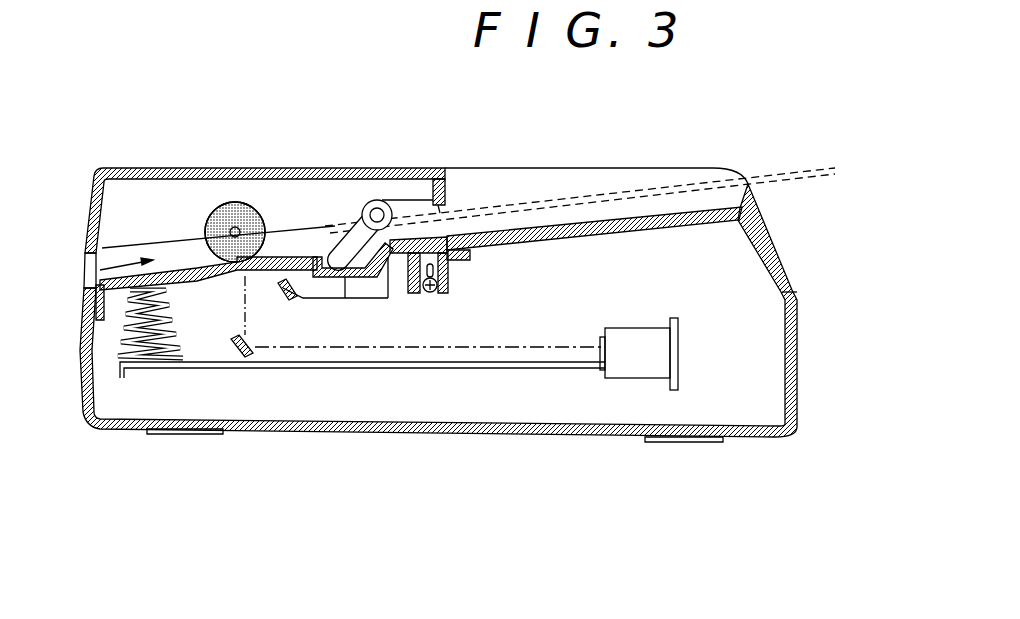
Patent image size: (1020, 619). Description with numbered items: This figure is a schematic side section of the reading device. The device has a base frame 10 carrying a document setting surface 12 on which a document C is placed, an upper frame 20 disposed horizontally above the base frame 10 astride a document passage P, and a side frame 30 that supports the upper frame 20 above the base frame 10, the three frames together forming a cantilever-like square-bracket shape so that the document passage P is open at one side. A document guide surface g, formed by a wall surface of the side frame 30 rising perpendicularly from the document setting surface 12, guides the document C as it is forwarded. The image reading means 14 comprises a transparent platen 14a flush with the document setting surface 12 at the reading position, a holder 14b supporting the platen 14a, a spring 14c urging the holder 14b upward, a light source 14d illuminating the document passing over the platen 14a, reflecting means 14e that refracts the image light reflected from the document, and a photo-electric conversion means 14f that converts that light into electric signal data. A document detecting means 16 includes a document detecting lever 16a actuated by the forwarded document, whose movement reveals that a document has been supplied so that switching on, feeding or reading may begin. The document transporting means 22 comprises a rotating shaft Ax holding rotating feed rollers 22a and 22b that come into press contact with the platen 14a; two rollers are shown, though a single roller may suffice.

The base frame 10 is at (88, 421).
The document setting surface 12 is at (650, 210).
The image reading means 14 is at (537, 510).
The transparent platen 14a is at (215, 275).
The holder 14b is at (400, 310).
The spring 14c is at (183, 352).
The light source 14d is at (305, 300).
The reflecting means 14e is at (246, 340).
The photo-electric conversion means 14f is at (630, 362).
The document detecting means 16 is at (443, 120).
The document detecting lever 16a is at (410, 203).
The upper frame 20 is at (118, 170).
The document transporting means 22 is at (195, 104).
The rotating feed roller 22a is at (250, 203).
The rotating feed roller 22b is at (252, 195).
The side frame 30 is at (551, 170).
The rotating shaft Ax is at (229, 230).
The document passage P is at (88, 268).
The document guide surface g is at (592, 192).
The document C is at (790, 188).